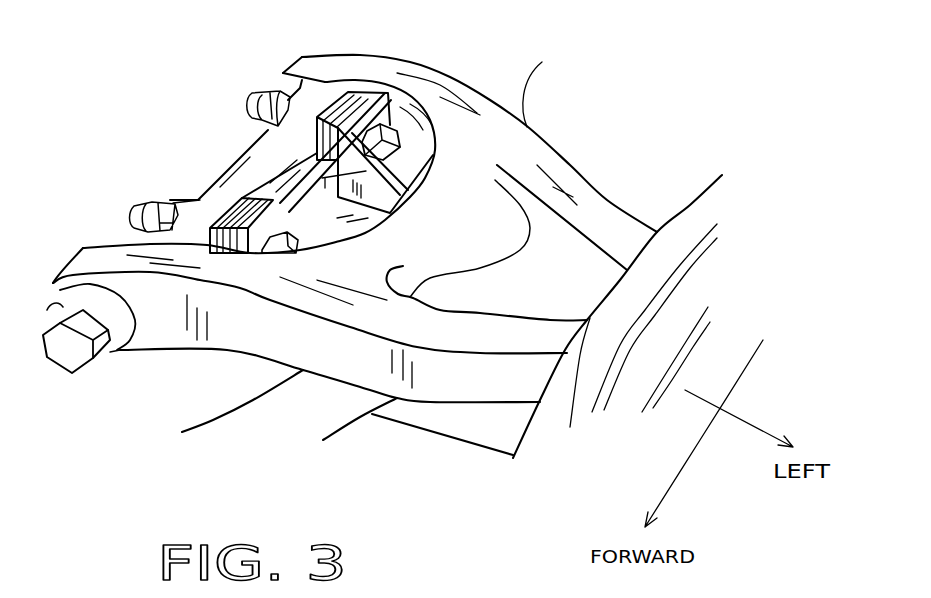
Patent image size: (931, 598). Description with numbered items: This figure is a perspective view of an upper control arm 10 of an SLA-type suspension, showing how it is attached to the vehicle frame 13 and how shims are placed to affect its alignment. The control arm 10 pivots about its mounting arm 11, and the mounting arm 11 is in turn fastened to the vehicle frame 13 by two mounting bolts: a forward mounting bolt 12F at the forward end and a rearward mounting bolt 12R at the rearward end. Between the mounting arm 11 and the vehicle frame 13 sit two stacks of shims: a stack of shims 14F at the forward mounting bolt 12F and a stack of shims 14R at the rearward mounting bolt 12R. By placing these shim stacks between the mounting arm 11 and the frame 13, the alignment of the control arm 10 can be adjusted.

The upper control arm 10 is at (538, 152).
The mounting arm 11 is at (250, 160).
The mounting bolt (rearward) 12R is at (253, 92).
The mounting bolt (forward) 12F is at (138, 203).
The vehicle frame 13 is at (400, 142).
The stack of shims (rearward) 14R is at (362, 97).
The stack of shims (forward) 14F is at (208, 224).